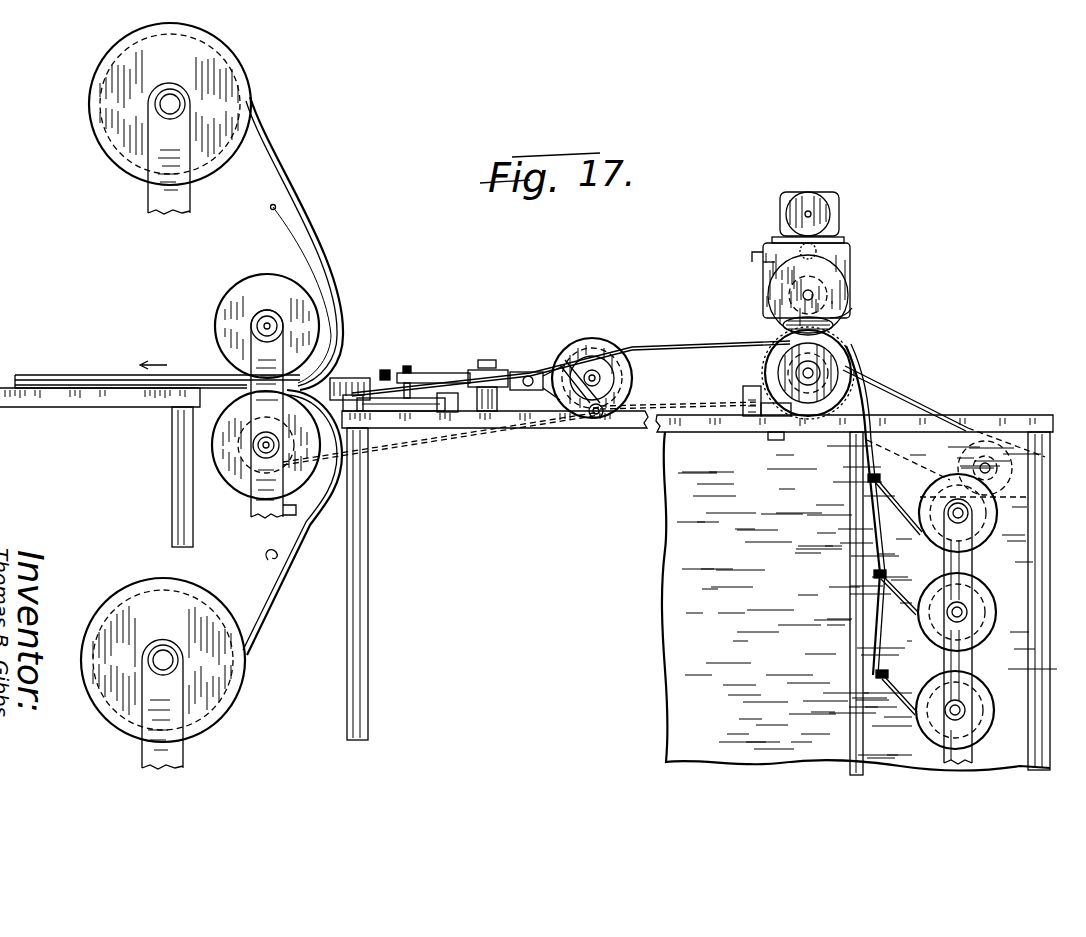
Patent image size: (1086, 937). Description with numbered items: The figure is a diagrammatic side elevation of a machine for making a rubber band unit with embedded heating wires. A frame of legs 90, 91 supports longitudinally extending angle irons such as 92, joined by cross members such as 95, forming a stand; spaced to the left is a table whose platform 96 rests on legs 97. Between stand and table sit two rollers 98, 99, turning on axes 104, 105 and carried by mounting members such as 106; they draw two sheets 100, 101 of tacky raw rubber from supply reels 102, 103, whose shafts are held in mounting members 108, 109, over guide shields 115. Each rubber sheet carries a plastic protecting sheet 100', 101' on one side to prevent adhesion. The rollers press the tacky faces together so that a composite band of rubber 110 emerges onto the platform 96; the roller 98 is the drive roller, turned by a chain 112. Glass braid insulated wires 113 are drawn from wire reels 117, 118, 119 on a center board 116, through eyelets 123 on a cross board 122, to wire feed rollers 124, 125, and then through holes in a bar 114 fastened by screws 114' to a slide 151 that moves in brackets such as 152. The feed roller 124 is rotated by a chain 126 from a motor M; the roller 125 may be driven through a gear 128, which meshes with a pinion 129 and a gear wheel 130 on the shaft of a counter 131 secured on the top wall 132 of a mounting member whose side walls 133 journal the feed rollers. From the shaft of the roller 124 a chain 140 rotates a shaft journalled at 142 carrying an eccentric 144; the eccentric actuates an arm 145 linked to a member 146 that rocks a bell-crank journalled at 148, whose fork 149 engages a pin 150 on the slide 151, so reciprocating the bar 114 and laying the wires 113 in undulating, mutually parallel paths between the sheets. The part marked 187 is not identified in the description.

The leg 90 is at (368, 592).
The leg 91 is at (1043, 507).
The angle iron 92 is at (650, 430).
The cross member 95 is at (1058, 428).
The platform 96 is at (32, 410).
The leg 97 is at (174, 480).
The roller 98 is at (255, 462).
The roller 99 is at (222, 340).
The sheet of raw rubber 100 is at (292, 522).
The plastic protecting sheet 100' is at (169, 505).
The sheet of raw rubber 101 is at (296, 243).
The plastic protecting sheet 101' is at (208, 254).
The supply reel 102 is at (232, 696).
The supply reel 103 is at (227, 73).
The axis 104 is at (248, 506).
The axis 105 is at (258, 322).
The mounting member 106 is at (250, 512).
The mounting member 108 is at (157, 170).
The mounting member 109 is at (175, 757).
The composite band of rubber 110 is at (48, 382).
The chain 112 is at (414, 450).
The glass braid insulated wires 113 is at (342, 372).
The bar 114 is at (358, 371).
The screws 114' is at (406, 339).
The shields 115 is at (287, 222).
The center board 116 is at (685, 660).
The wire reel 117 is at (988, 519).
The wire reel 118 is at (984, 610).
The wire reel 119 is at (984, 696).
The cross board 122 is at (852, 750).
The eyelets 123 is at (868, 489).
The wire feed roller 124 is at (848, 354).
The wire feed roller 125 is at (842, 320).
The chain 126 is at (920, 404).
The gear 128 is at (836, 331).
The pinion 129 is at (852, 247).
The gear wheel 130 is at (835, 223).
The counter 131 is at (838, 202).
The top wall 132 is at (762, 252).
The side wall 133 is at (770, 264).
The chain 140 is at (663, 350).
The journal 142 is at (570, 417).
The eccentric 144 is at (603, 340).
The arm 145 is at (594, 419).
The member 146 is at (532, 392).
The journal 148 is at (483, 360).
The fork 149 is at (423, 371).
The pin 150 is at (410, 366).
The slide 151 is at (390, 382).
The bracket 152 is at (388, 370).
The bracket 187 is at (776, 440).
The motor M is at (1016, 462).